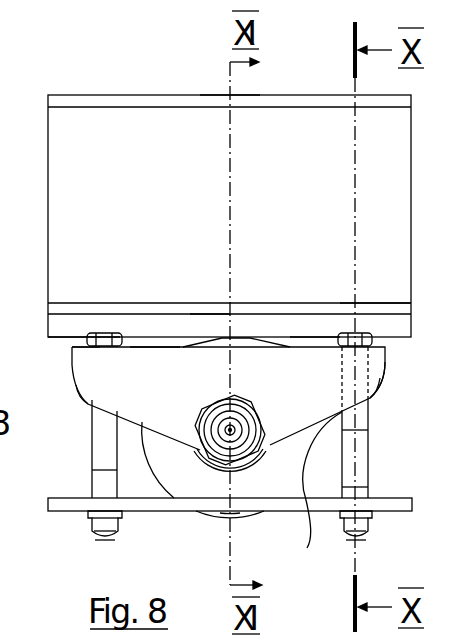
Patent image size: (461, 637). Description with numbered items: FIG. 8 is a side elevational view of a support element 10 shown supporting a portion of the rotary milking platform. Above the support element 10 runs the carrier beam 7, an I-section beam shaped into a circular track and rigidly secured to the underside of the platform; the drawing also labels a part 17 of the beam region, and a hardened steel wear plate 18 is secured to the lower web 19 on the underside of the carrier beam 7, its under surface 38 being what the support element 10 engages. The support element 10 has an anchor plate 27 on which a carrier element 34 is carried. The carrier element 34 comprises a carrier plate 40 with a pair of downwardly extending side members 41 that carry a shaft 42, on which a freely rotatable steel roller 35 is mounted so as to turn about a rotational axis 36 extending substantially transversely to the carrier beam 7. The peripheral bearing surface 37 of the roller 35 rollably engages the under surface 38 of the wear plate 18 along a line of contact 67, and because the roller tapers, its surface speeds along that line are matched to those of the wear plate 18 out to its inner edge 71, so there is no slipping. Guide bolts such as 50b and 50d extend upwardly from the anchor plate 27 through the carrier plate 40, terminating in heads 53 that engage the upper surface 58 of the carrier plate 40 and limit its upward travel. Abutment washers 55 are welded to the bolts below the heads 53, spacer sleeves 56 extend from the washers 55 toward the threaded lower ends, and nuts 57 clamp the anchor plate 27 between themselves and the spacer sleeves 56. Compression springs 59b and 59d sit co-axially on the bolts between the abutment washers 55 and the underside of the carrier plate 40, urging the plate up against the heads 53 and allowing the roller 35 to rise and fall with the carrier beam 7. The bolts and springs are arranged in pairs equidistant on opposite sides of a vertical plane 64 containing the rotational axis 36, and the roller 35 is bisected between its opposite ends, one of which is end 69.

The carrier beam 7 is at (118, 95).
The support element 10 is at (64, 563).
The frame housing 17 is at (70, 148).
The wear plate 18 is at (168, 322).
The lower web 19 is at (377, 302).
The anchor plate 27 is at (382, 507).
The carrier element 34 is at (390, 353).
The roller 35 is at (192, 485).
The rotational axis 36 is at (231, 428).
The peripheral bearing surface 37 is at (241, 518).
The under surface 38 is at (66, 340).
The carrier plate 40 is at (313, 337).
The side members 41 is at (378, 378).
The shaft 42 is at (245, 429).
The guide bolt 50b is at (100, 563).
The guide bolt 50d is at (352, 540).
The heads 53 is at (103, 333).
The abutment washers 55 is at (91, 423).
The spacer sleeves 56 is at (413, 522).
The nuts 57 is at (90, 523).
The upper surface 58 is at (149, 347).
The compression spring 59b is at (88, 404).
The compression spring 59d is at (370, 399).
The vertical plane 64 is at (230, 93).
The line of contact 67 is at (235, 340).
The end of roller 69 is at (316, 499).
The inner edge 71 is at (208, 322).